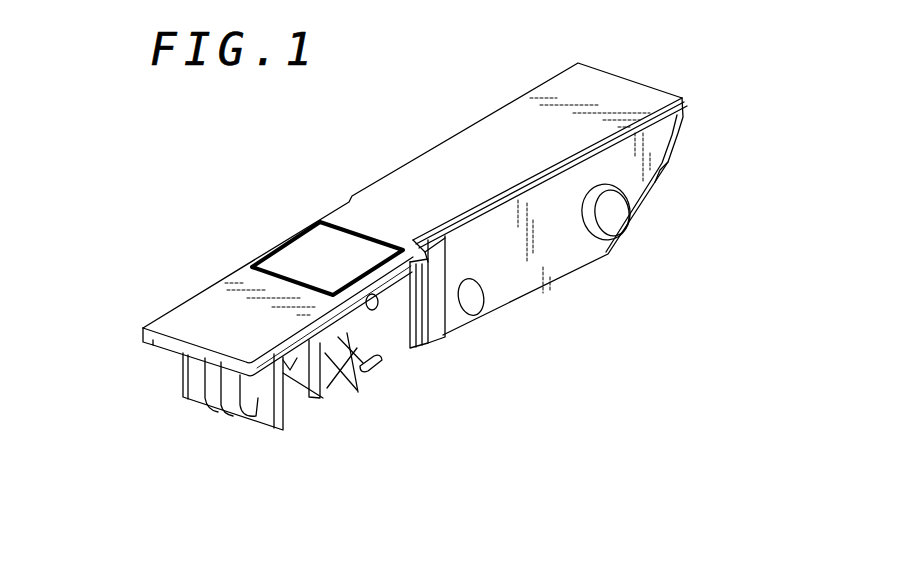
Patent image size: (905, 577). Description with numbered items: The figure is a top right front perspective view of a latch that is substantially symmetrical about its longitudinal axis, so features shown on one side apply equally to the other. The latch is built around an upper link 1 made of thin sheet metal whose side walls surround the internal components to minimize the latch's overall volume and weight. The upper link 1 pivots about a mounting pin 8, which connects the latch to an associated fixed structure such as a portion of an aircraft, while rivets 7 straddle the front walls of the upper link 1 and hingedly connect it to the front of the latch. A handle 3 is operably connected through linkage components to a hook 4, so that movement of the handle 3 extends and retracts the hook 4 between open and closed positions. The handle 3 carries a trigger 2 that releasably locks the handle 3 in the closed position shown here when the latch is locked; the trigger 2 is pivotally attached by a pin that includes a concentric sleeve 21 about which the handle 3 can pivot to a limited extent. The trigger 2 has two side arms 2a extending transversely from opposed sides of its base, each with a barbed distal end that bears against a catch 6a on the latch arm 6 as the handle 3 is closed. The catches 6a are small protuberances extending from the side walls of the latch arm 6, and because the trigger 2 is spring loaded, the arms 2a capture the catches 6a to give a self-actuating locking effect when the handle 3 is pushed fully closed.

The upper link 1 is at (512, 127).
The trigger 2 is at (312, 258).
The concentric sleeve 21 is at (372, 296).
The handle 3 is at (200, 318).
The hook 4 is at (255, 400).
The side arms 2a is at (345, 372).
The latch arm 6 is at (378, 362).
The catch 6a is at (392, 333).
The rivets 7 is at (473, 298).
The mounting pin 8 is at (612, 212).